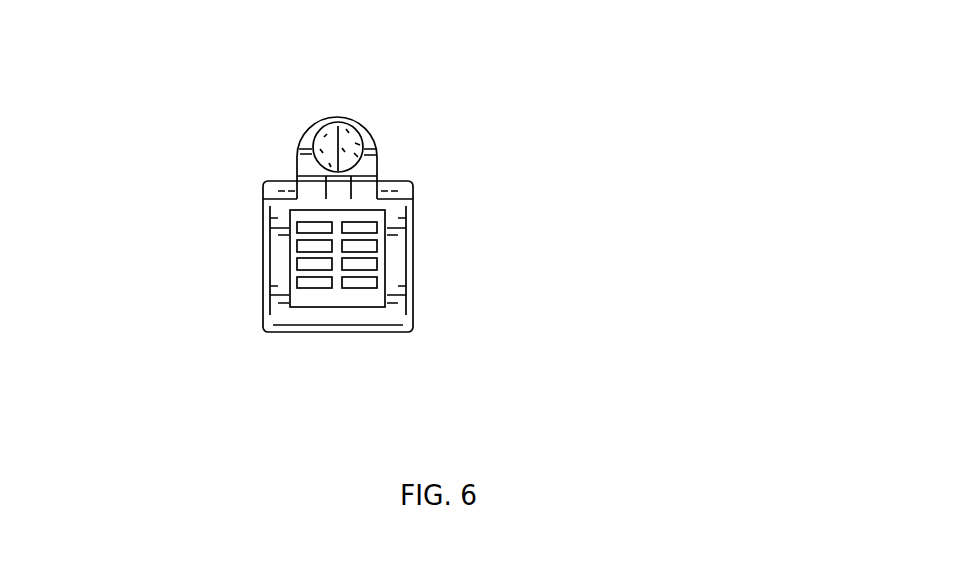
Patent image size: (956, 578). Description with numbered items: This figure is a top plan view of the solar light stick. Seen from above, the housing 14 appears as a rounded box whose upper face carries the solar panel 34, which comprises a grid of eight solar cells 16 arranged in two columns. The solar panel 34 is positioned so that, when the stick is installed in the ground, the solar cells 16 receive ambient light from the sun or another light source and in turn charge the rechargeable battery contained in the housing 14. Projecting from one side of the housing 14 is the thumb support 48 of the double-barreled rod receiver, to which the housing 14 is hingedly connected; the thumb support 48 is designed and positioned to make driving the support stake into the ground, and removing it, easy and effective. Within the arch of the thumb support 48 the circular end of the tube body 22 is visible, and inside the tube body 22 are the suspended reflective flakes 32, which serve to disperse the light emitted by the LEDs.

The housing 14 is at (278, 262).
The solar cell or cells 16 is at (367, 283).
The tube body 22 is at (343, 135).
The reflective flakes 32 is at (337, 153).
The solar panel 34 is at (370, 215).
The thumb support 48 is at (350, 152).